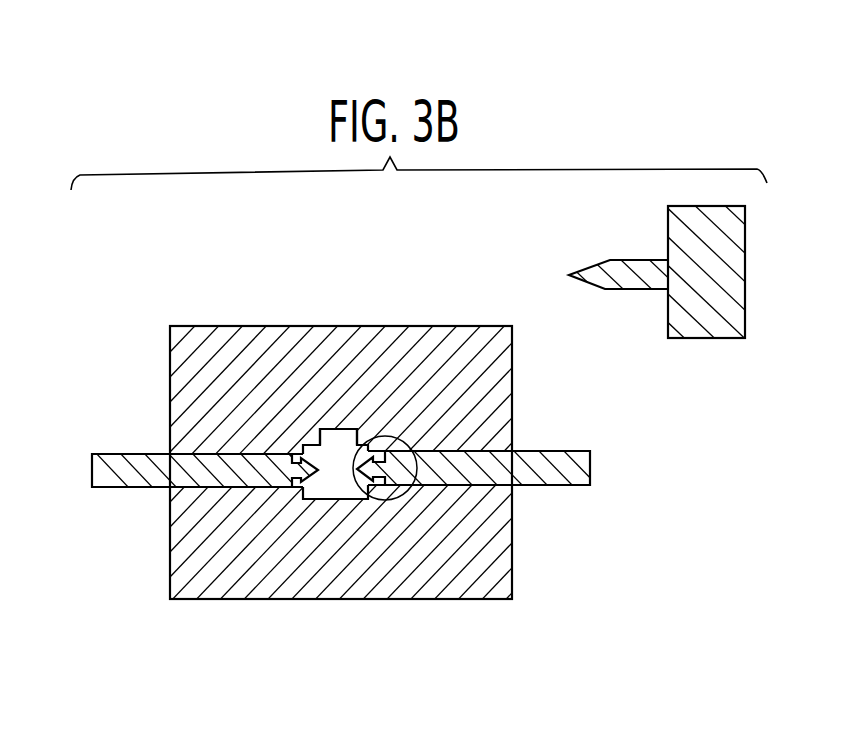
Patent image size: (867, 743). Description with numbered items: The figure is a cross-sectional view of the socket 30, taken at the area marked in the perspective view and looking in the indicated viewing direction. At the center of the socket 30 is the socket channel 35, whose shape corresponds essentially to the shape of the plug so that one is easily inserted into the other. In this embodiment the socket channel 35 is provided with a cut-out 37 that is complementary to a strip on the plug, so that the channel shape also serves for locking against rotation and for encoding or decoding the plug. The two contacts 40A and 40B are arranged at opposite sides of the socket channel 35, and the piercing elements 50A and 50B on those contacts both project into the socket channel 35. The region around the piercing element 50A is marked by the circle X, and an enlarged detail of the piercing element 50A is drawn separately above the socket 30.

The socket 30 is at (500, 575).
The socket channel 35 is at (328, 492).
The cut-out 37 is at (332, 437).
The contact 40A is at (573, 478).
The contact 40B is at (128, 483).
The piercing element 50A is at (370, 443).
The piercing element 50B is at (308, 443).
The detail region X is at (390, 500).